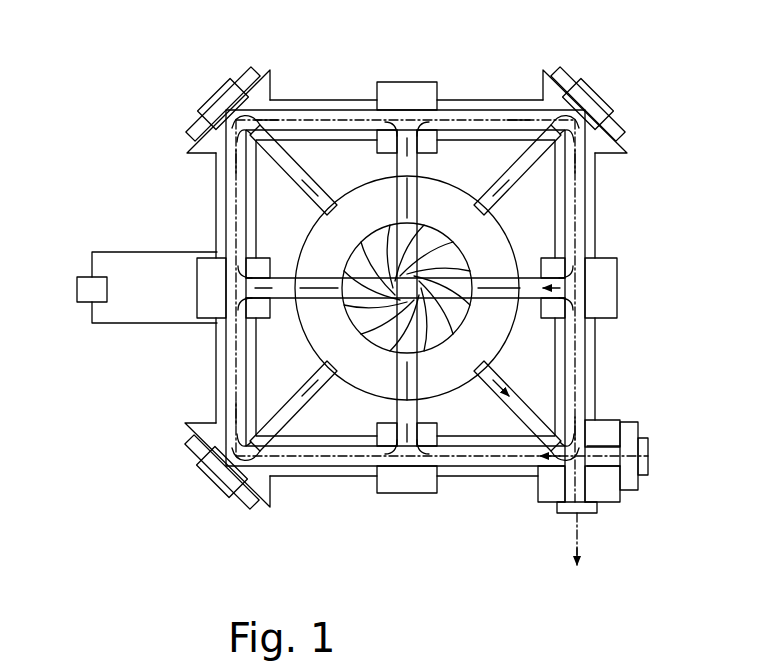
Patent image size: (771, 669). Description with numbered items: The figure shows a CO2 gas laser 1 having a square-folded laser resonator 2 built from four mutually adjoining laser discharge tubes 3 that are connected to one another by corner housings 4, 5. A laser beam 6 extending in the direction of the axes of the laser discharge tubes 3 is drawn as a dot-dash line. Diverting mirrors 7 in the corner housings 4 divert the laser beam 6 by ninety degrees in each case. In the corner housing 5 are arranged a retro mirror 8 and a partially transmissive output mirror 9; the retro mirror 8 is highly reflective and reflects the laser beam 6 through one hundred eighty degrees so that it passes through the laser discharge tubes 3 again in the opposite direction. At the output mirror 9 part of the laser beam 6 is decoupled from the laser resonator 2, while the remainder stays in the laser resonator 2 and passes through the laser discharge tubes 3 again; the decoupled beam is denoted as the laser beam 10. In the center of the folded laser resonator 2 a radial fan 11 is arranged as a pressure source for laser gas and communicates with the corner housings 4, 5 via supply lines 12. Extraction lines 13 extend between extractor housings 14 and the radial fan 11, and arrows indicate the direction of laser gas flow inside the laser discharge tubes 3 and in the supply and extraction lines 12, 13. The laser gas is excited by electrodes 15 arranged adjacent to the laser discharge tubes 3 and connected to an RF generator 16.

The CO2 gas laser 1 is at (160, 90).
The laser resonator 2 is at (140, 236).
The laser discharge tubes 3 is at (363, 100).
The corner housing 4 is at (187, 152).
The corner housing 5 is at (620, 497).
The laser beam 6 is at (573, 400).
The diverting mirrors 7 is at (222, 99).
The retro mirror 8 is at (648, 457).
The partially transmissive output mirror 9 is at (590, 512).
The decoupled laser beam 10 is at (572, 540).
The radial fan 11 is at (442, 248).
The supply lines 12 is at (294, 158).
The extraction lines 13 is at (421, 166).
The extractor housings 14 is at (407, 82).
The electrodes 15 is at (313, 132).
The RF generator 16 is at (88, 296).